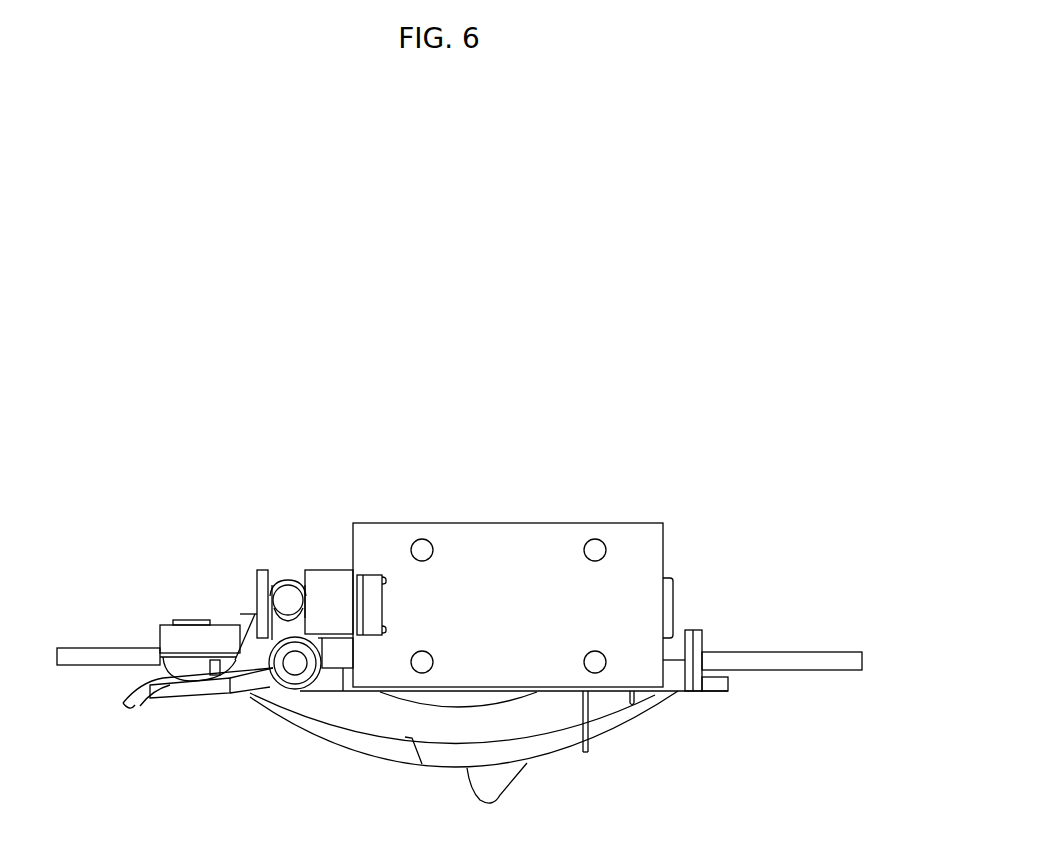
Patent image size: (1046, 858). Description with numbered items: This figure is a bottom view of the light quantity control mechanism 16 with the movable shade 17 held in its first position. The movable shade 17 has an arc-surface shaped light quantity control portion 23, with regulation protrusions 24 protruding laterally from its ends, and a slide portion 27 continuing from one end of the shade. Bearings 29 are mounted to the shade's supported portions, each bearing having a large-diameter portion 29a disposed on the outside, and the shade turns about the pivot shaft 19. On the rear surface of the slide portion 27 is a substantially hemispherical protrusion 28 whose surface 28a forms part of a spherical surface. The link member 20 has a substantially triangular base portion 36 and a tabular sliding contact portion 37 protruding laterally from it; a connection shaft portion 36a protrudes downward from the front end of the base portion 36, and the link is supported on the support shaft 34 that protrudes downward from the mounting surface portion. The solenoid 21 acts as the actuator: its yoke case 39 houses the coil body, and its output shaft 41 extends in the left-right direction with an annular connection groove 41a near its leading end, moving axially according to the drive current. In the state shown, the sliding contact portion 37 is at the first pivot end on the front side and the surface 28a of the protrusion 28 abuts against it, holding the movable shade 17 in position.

The light quantity control mechanism 16 is at (752, 264).
The movable shade 17 is at (553, 750).
The pivot shaft 19 is at (843, 657).
The link member 20 is at (213, 690).
The solenoid 21 is at (527, 533).
The light quantity control portion 23 is at (445, 762).
The regulation protrusion 24 is at (720, 688).
The slide portion 27 is at (222, 632).
The protrusion 28 is at (157, 677).
The surface 28a is at (133, 698).
The bearing 29 is at (698, 637).
The large-diameter portion 29a is at (700, 635).
The support shaft 34 is at (295, 668).
The base portion 36 is at (283, 582).
The connection shaft portion 36a is at (289, 590).
The sliding contact portion 37 is at (188, 693).
The yoke case 39 is at (577, 533).
The output shaft 41 is at (255, 613).
The connection groove 41a is at (305, 578).